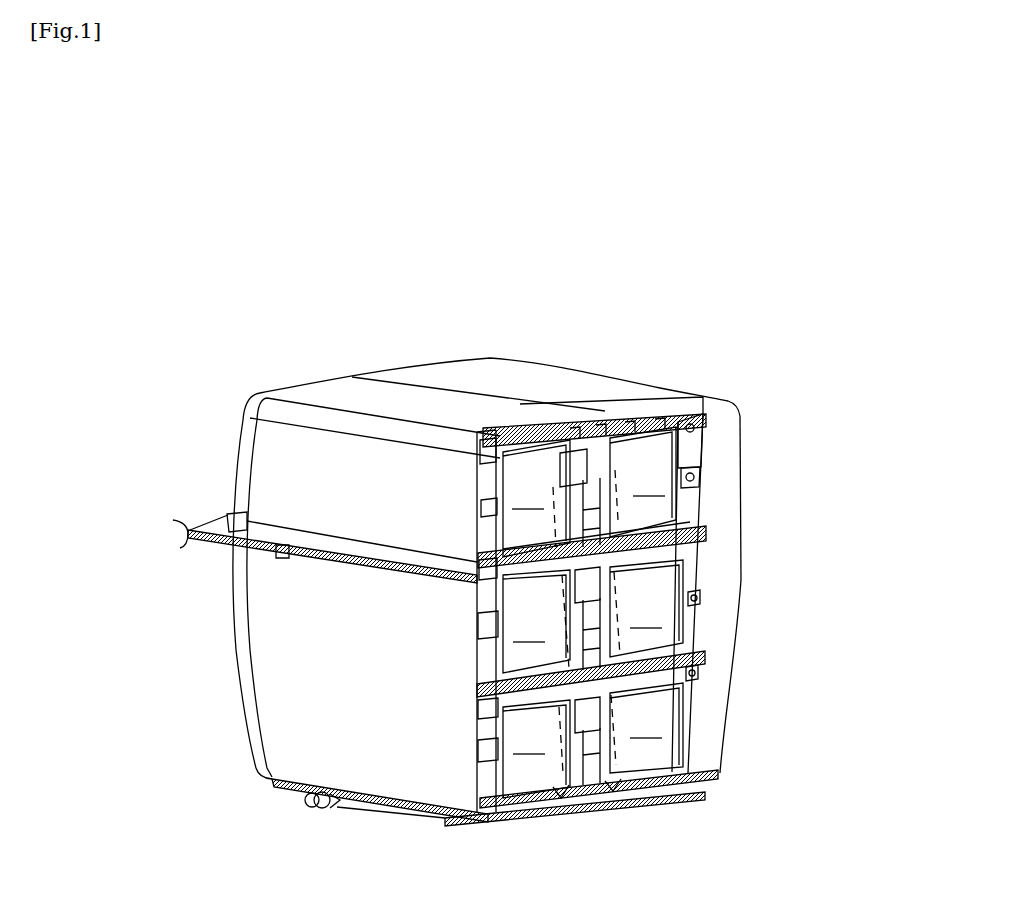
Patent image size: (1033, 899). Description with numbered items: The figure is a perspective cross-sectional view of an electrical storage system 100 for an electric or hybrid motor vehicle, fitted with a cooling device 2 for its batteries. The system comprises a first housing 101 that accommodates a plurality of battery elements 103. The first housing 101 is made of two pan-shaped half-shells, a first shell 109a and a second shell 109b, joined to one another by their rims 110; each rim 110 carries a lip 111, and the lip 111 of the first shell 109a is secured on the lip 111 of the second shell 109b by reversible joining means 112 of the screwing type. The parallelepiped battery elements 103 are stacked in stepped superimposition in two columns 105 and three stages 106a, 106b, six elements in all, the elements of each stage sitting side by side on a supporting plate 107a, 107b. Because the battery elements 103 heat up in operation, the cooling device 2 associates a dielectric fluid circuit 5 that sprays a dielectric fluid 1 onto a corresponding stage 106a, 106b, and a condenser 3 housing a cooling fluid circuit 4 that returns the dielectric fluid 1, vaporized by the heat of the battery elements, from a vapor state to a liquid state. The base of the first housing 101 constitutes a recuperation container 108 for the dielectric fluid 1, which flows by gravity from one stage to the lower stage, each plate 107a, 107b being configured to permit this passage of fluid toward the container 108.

The dielectric fluid 1 is at (670, 778).
The cooling device 2 is at (677, 300).
The condenser 3 is at (525, 440).
The cooling fluid circuit 4 is at (657, 408).
The dielectric fluid circuit 5 is at (483, 447).
The electrical storage system 100 is at (560, 282).
The first housing 101 is at (153, 417).
The battery element 103 is at (593, 612).
The column 105 is at (493, 408).
The stage 106a is at (757, 707).
The stage 106b is at (752, 458).
The plate 107a is at (480, 815).
The plate 107b is at (477, 597).
The recuperation container 108 is at (603, 803).
The first shell 109a is at (352, 377).
The second shell 109b is at (258, 752).
The rim 110 is at (247, 525).
The lip 111 is at (173, 520).
The reversible joining means 112 is at (282, 557).